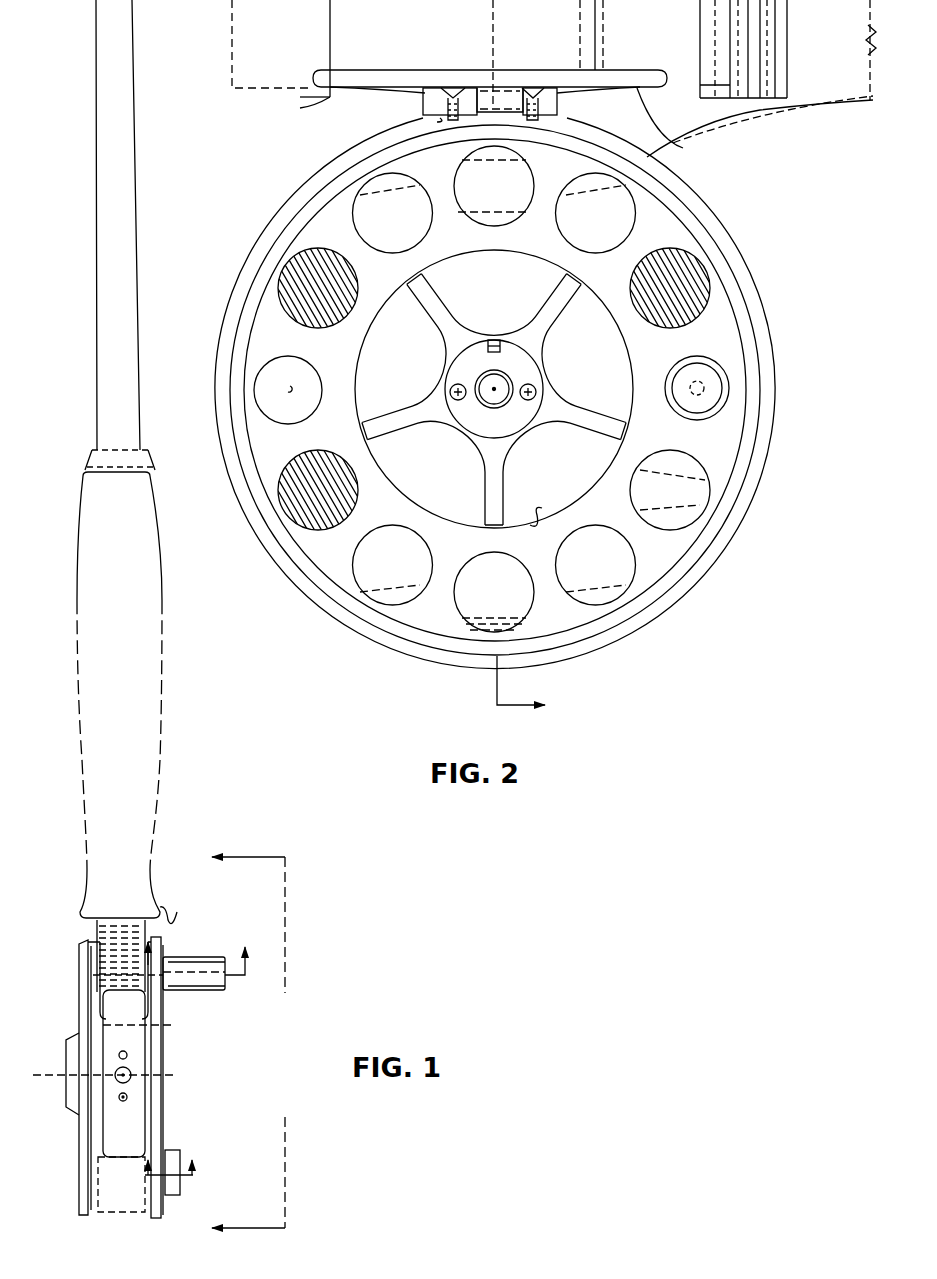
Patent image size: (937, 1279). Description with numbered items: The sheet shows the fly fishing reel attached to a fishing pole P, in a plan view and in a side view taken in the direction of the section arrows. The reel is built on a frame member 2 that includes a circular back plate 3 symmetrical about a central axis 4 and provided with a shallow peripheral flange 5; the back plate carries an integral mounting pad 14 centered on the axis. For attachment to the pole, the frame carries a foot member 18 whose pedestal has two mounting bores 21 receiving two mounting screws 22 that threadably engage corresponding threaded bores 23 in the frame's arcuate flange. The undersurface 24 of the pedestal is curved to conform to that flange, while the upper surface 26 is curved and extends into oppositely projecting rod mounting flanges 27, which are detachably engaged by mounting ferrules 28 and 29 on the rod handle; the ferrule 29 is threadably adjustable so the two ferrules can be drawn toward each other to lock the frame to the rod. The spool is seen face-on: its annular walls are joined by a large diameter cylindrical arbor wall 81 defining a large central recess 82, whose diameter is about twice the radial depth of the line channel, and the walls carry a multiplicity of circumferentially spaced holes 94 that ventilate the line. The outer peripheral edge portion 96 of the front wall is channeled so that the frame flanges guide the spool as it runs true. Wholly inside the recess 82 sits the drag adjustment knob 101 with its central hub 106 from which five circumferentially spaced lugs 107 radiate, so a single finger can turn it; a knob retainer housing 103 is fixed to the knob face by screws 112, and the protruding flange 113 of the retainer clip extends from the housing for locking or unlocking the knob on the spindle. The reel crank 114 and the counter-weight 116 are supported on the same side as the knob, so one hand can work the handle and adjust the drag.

In FIG. 1, the frame member 2 is at (45, 935).
In FIG. 2, the circular back plate 3 is at (503, 687).
In FIG. 1, the circular back plate 3 is at (83, 1170).
In FIG. 1, the central axis 4 is at (53, 1074).
In FIG. 1, the shallow peripheral flange 5 is at (170, 1179).
In FIG. 1, the mounting pad 14 is at (70, 1098).
In FIG. 2, the foot member 18 is at (368, 98).
In FIG. 1, the foot member 18 is at (135, 1084).
In FIG. 2, the mounting bores 21 is at (428, 99).
In FIG. 2, the mounting screws 22 is at (454, 86).
In FIG. 2, the threaded bores 23 is at (553, 125).
In FIG. 2, the undersurface of the pedestal 24 is at (443, 115).
In FIG. 2, the upper surface of the pedestal 26 is at (499, 80).
In FIG. 2, the rod mounting flanges 27 is at (290, 130).
In FIG. 1, the rod mounting flanges 27 is at (128, 1140).
In FIG. 2, the mounting ferrule 28 is at (290, 58).
In FIG. 1, the mounting ferrule 28 is at (107, 1183).
In FIG. 2, the mounting ferrule 29 is at (670, 46).
In FIG. 1, the mounting ferrule 29 is at (137, 990).
In FIG. 2, the cylindrical arbor wall 81 is at (473, 256).
In FIG. 2, the central recess 82 is at (525, 534).
In FIG. 2, the holes 94 is at (619, 229).
In FIG. 2, the outer peripheral edge portion 96 is at (738, 570).
In FIG. 2, the drag adjustment knob 101 is at (438, 366).
In FIG. 2, the knob retainer housing 103 is at (512, 428).
In FIG. 2, the central hub 106 is at (555, 372).
In FIG. 2, the lugs 107 is at (490, 484).
In FIG. 2, the screws 112 is at (458, 402).
In FIG. 2, the protruding flange of the clip 113 is at (493, 337).
In FIG. 2, the reel crank 114 is at (733, 362).
In FIG. 1, the reel crank 114 is at (212, 997).
In FIG. 2, the counter-weight 116 is at (248, 396).
In FIG. 1, the counter-weight 116 is at (175, 1150).
In FIG. 2, the fishing pole P is at (840, 50).
In FIG. 1, the fishing pole P is at (78, 597).